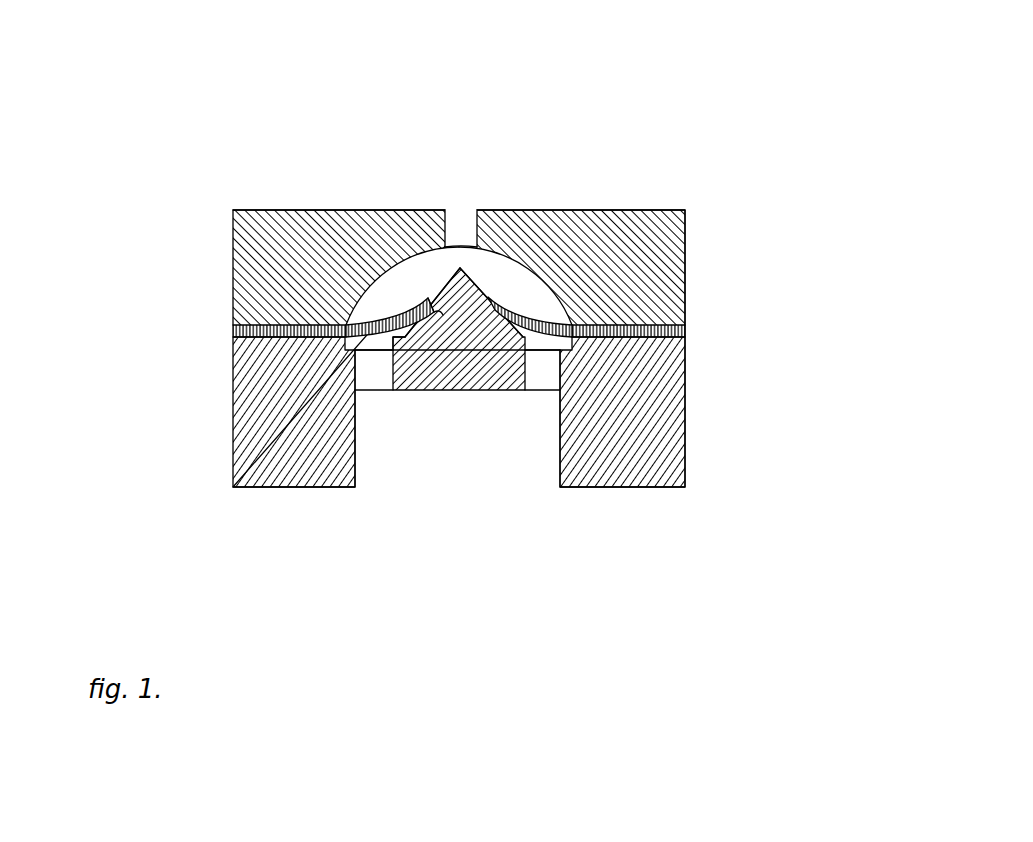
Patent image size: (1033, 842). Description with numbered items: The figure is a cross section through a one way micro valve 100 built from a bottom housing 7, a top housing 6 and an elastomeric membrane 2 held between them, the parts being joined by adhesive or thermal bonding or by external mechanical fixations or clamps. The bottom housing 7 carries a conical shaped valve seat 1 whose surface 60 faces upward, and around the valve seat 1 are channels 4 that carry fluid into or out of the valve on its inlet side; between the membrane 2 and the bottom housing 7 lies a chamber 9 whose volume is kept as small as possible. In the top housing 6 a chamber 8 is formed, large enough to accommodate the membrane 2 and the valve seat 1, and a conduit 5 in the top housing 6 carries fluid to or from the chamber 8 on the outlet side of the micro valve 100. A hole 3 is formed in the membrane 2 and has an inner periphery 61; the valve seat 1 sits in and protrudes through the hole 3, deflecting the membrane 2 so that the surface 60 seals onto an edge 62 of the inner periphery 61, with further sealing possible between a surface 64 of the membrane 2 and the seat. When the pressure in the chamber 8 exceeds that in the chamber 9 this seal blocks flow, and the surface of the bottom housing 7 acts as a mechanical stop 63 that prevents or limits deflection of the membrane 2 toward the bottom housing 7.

The one way micro valve 100 is at (656, 92).
The conical shaped valve seat 1 is at (485, 327).
The membrane 2 is at (230, 331).
The hole 3 is at (428, 285).
The channels 4 is at (537, 393).
The conduit 5 is at (457, 186).
The top housing 6 is at (230, 209).
The bottom housing 7 is at (688, 418).
The chamber 8 is at (532, 278).
The chamber 9 is at (385, 343).
The surface 60 is at (480, 290).
The inner periphery 61 is at (432, 302).
The edge 62 is at (438, 313).
The mechanical stop 63 is at (398, 355).
The surface of the membrane 64 is at (417, 337).